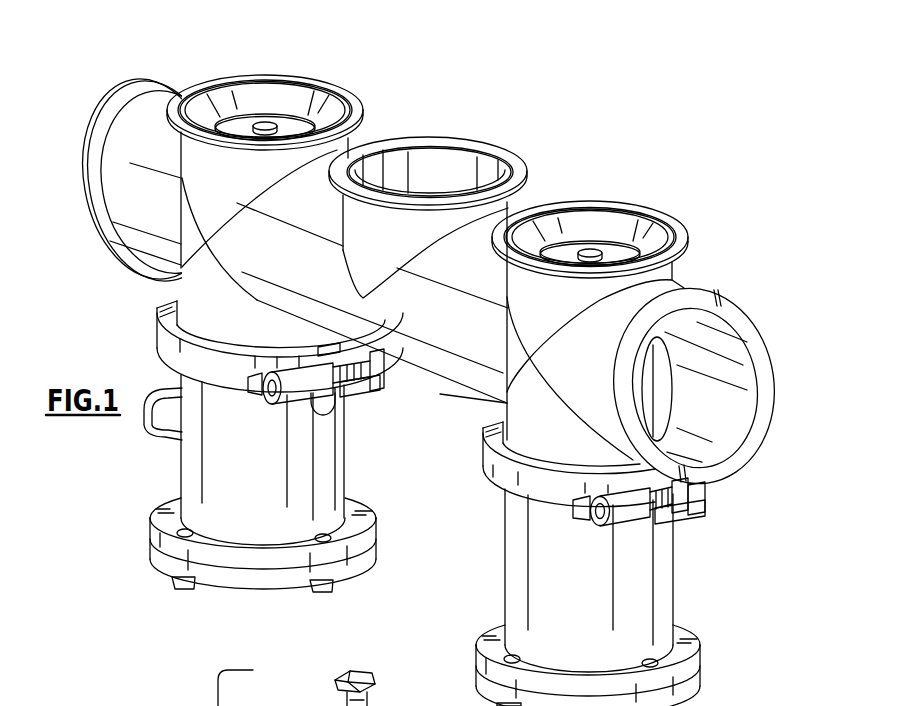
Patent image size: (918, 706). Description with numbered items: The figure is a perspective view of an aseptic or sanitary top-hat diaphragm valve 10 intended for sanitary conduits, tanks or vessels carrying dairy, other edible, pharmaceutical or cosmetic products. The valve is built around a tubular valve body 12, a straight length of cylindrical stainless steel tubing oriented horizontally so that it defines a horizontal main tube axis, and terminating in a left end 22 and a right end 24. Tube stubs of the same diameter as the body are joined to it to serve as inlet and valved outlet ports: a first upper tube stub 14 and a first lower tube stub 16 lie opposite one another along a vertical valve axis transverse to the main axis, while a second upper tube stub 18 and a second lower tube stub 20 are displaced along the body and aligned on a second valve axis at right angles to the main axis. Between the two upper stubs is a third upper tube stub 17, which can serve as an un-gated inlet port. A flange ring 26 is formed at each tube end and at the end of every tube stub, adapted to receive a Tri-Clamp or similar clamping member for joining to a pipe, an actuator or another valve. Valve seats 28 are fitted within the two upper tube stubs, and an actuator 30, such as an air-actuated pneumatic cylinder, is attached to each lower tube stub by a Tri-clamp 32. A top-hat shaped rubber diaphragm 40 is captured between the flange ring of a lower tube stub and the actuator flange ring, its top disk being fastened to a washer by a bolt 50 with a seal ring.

The top-hat diaphragm valve 10 is at (719, 160).
The tubular valve body 12 is at (452, 363).
The first upper tube stub 14 is at (188, 174).
The first lower tube stub 16 is at (203, 317).
The third upper tube stub 17 is at (508, 207).
The second upper tube stub 18 is at (673, 270).
The second lower tube stub 20 is at (530, 438).
The left end 22 is at (60, 182).
The right end 24 is at (790, 380).
The flange ring 26 is at (127, 100).
The valve seat 28 is at (289, 102).
The actuator 30 is at (203, 473).
The Tri-clamp 32 is at (157, 348).
The diaphragm 40 is at (640, 404).
The bolt 50 is at (388, 700).